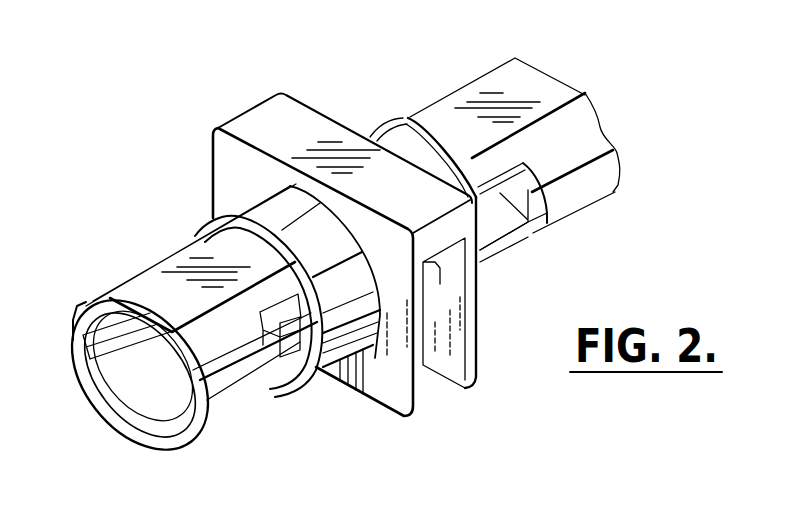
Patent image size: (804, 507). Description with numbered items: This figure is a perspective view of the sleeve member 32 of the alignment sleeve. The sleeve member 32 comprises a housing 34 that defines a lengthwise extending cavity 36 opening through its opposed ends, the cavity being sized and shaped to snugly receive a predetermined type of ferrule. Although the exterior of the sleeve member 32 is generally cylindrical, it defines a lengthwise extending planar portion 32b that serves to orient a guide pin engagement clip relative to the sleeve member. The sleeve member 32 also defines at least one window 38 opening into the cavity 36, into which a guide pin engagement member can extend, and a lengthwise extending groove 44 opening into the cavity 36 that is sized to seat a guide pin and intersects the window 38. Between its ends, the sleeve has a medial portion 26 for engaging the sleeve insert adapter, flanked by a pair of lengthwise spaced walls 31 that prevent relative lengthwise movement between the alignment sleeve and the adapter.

The medial portion 26 is at (480, 363).
The walls 31 is at (370, 402).
The sleeve member 32 is at (541, 46).
The lengthwise extending planar portion 32b is at (148, 295).
The housing 34 is at (605, 175).
The lengthwise extending cavity 36 is at (145, 373).
The window 38 is at (513, 188).
The lengthwise extending grooves 44 is at (88, 348).